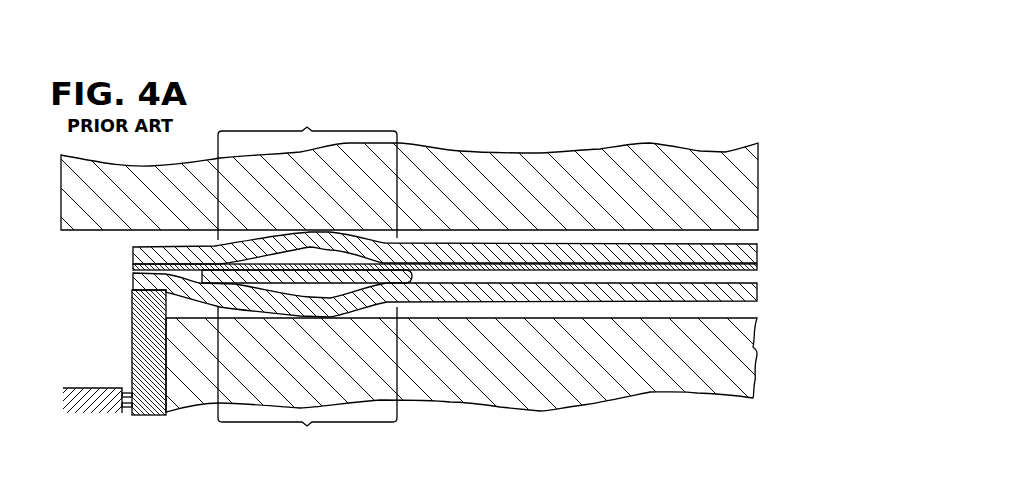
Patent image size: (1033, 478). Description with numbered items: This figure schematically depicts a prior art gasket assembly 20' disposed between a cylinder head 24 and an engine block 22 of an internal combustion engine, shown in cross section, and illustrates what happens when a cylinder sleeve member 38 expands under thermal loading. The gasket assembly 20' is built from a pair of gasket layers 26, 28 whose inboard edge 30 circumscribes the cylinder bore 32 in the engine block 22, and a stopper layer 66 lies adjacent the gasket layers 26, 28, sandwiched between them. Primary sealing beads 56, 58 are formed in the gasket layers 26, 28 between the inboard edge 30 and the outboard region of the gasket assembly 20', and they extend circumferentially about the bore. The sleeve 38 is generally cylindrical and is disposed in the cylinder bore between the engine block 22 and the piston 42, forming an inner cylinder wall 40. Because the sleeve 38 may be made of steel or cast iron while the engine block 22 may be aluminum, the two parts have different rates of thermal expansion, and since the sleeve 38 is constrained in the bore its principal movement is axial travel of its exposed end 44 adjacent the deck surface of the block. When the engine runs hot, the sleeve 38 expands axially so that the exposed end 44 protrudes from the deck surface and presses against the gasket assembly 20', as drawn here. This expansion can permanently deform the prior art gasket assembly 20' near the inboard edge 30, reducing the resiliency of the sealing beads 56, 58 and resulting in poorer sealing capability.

The prior art gasket assembly 20' is at (815, 244).
The engine block 22 is at (527, 366).
The cylinder head 24 is at (440, 192).
The gasket layer 26 is at (535, 243).
The gasket layer 28 is at (557, 290).
The inboard edge 30 is at (128, 280).
The cylinder bore 32 is at (65, 257).
The cylinder sleeve member 38 is at (143, 398).
The inner cylinder wall 40 is at (128, 363).
The piston 42 is at (88, 388).
The exposed end 44 is at (133, 286).
The primary sealing bead 56 is at (307, 171).
The primary sealing bead 58 is at (307, 378).
The stopper layer 66 is at (414, 270).